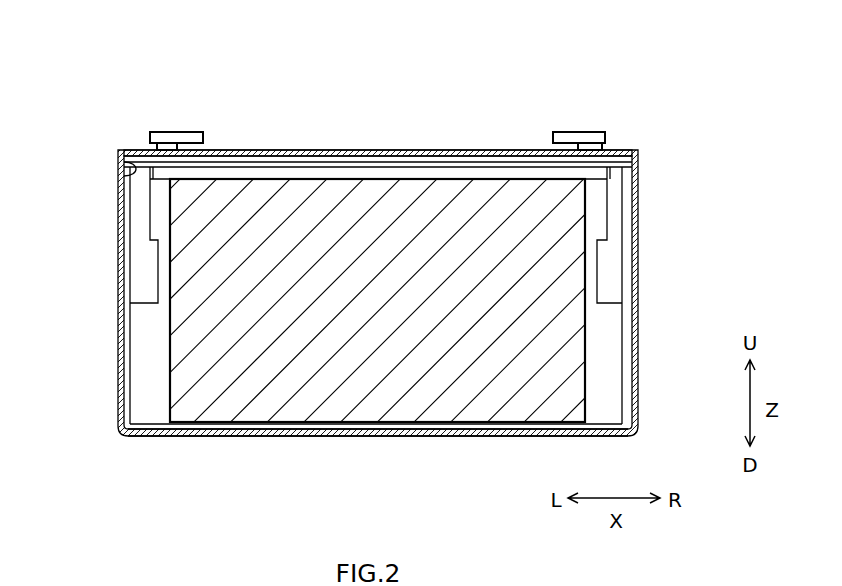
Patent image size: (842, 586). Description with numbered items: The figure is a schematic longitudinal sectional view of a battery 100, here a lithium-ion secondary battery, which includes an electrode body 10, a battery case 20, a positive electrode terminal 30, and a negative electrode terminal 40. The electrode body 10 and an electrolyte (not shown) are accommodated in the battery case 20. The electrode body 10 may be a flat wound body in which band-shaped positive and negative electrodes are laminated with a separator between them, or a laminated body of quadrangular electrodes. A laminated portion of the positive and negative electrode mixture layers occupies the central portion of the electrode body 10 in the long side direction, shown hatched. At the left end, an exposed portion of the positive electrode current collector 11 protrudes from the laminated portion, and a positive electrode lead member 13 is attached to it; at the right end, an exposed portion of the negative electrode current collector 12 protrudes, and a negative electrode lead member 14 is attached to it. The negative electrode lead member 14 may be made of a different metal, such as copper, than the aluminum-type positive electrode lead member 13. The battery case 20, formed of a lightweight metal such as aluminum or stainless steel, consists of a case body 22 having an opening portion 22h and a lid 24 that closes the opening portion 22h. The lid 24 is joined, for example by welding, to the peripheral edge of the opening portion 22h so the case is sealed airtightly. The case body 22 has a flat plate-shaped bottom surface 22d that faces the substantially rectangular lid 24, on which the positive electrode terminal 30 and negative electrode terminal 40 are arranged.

The battery 100 is at (110, 64).
The electrode body 10 is at (470, 421).
The positive electrode current collector 11 is at (138, 348).
The negative electrode current collector 12 is at (622, 348).
The positive electrode lead member 13 is at (138, 270).
The negative electrode lead member 14 is at (624, 273).
The battery case 20 is at (634, 146).
The case body 22 is at (638, 216).
The bottom surface 22d is at (255, 438).
The opening portion 22h is at (127, 172).
The lid 24 is at (290, 150).
The positive electrode terminal 30 is at (167, 132).
The negative electrode terminal 40 is at (580, 132).